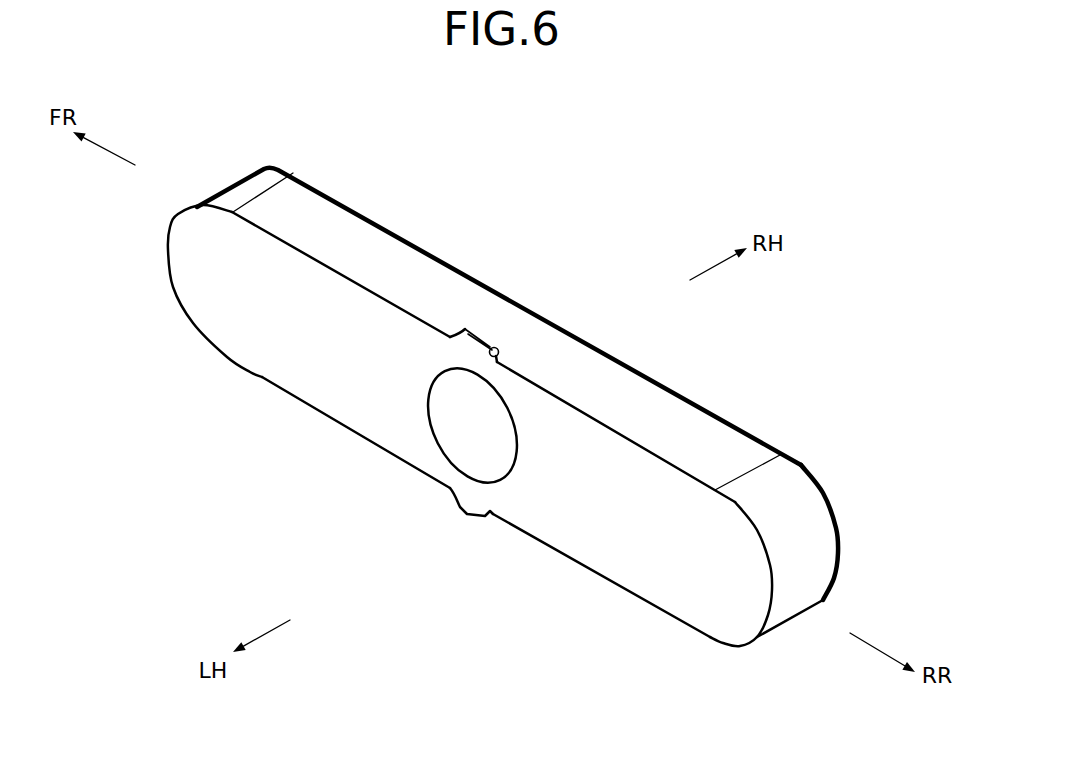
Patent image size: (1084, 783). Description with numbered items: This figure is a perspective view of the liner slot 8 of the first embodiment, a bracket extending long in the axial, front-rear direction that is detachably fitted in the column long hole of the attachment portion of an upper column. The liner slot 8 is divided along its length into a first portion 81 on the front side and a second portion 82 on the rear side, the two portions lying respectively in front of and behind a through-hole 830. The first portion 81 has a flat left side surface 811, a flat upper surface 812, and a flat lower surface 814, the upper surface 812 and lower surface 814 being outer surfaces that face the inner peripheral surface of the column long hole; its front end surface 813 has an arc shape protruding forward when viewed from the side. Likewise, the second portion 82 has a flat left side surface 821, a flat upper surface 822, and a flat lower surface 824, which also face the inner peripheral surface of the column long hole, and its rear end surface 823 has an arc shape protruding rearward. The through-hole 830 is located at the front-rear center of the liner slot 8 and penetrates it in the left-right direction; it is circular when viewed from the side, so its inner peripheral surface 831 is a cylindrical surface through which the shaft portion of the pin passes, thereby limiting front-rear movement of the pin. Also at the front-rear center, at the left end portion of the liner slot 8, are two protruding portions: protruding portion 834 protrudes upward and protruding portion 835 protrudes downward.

The liner slot 8 is at (620, 267).
The first portion 81 is at (270, 339).
The left side surface 811 is at (325, 362).
The upper surface 812 is at (342, 220).
The front end surface 813 is at (168, 227).
The lower surface 814 is at (325, 418).
The second portion 82 is at (636, 566).
The left side surface 821 is at (680, 577).
The upper surface 822 is at (720, 445).
The rear end surface 823 is at (798, 582).
The lower surface 824 is at (592, 572).
The through-hole 830 is at (606, 405).
The inner peripheral surface 831 is at (480, 430).
The protruding portion 834 is at (478, 330).
The protruding portion 835 is at (473, 503).